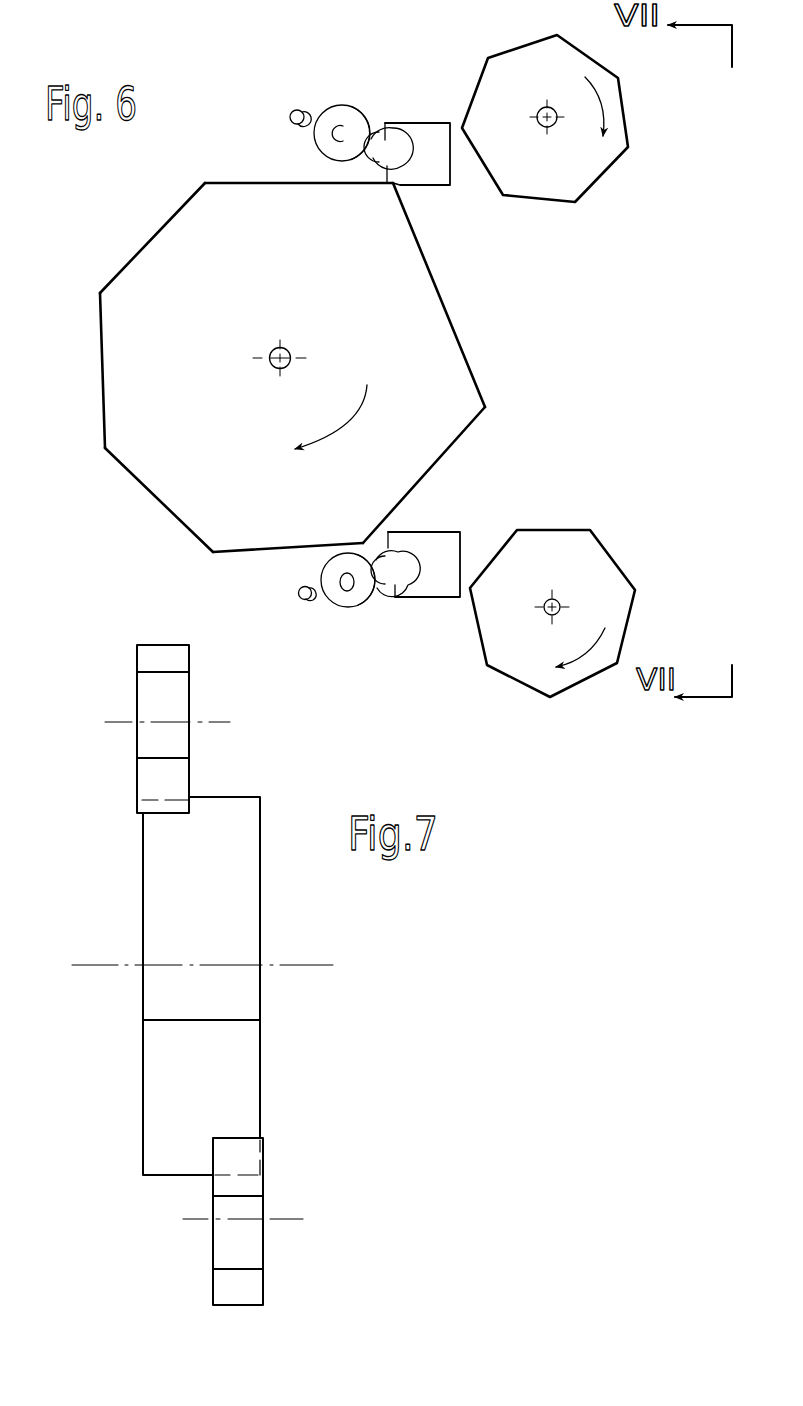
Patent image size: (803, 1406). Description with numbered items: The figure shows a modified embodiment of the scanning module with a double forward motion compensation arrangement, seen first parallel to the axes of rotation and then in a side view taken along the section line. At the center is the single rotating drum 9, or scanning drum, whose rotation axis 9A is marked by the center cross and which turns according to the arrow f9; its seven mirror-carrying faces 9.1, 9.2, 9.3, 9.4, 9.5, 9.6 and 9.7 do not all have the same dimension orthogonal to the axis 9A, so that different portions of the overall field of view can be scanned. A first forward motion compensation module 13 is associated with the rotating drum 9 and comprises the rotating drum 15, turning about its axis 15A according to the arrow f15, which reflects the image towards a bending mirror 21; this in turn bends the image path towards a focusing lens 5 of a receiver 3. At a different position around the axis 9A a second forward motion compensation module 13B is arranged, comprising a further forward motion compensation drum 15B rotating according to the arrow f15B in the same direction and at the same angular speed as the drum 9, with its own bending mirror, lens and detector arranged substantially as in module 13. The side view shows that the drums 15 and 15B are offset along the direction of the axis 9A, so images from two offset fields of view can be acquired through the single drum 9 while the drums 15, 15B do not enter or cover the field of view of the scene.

In FIG. 6, the detector 3 is at (292, 116).
In FIG. 6, the focusing lens 5 is at (370, 123).
In FIG. 6, the rotating drum 9 is at (285, 370).
In FIG. 7, the rotating drum 9 is at (134, 1024).
In FIG. 6, the face of the rotating drum 9.1 is at (255, 180).
In FIG. 6, the face of the rotating drum 9.2 is at (163, 227).
In FIG. 6, the face of the rotating drum 9.3 is at (100, 396).
In FIG. 6, the face of the rotating drum 9.4 is at (177, 520).
In FIG. 6, the face of the rotating drum 9.5 is at (280, 553).
In FIG. 6, the face of the rotating drum 9.6 is at (458, 442).
In FIG. 6, the face of the rotating drum 9.7 is at (464, 350).
In FIG. 6, the rotation axis 9A is at (284, 355).
In FIG. 7, the rotation axis 9A is at (206, 970).
In FIG. 6, the arrow indicating rotation of drum f9 is at (342, 426).
In FIG. 6, the first forward motion compensation module 13 is at (577, 613).
In FIG. 7, the first forward motion compensation module 13 is at (158, 1268).
In FIG. 6, the second forward motion compensation module 13B is at (561, 153).
In FIG. 7, the second forward motion compensation module 13B is at (174, 729).
In FIG. 6, the forward motion compensation drum 15 is at (538, 613).
In FIG. 7, the forward motion compensation drum 15 is at (286, 1194).
In FIG. 6, the axis of the forward motion compensation drum 15A is at (547, 613).
In FIG. 7, the axis of the forward motion compensation drum 15A is at (192, 1221).
In FIG. 6, the further forward motion compensation drum 15B is at (560, 214).
In FIG. 7, the further forward motion compensation drum 15B is at (128, 701).
In FIG. 6, the arrow indicating rotation of drum f15 is at (582, 658).
In FIG. 6, the arrow indicating rotation of drum f15B is at (602, 100).
In FIG. 6, the bending mirror 21 is at (424, 124).